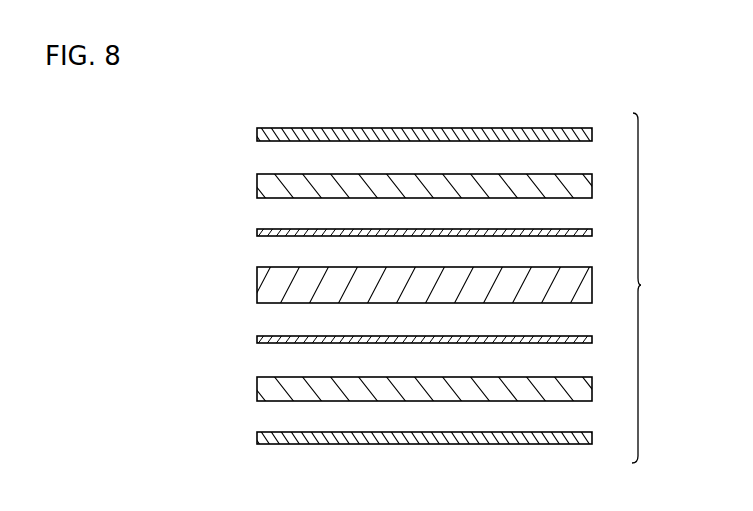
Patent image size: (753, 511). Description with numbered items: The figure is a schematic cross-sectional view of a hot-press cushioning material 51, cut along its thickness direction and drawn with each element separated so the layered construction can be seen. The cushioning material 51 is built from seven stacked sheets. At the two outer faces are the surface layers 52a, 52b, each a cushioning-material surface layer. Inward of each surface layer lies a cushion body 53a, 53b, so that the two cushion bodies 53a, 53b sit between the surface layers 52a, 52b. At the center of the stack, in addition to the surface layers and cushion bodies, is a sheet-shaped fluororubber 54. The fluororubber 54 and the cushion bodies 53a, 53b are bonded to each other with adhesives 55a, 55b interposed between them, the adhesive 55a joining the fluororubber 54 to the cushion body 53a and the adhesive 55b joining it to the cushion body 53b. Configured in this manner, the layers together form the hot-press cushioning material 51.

The cushioning material 51 is at (677, 297).
The surface layer 52a is at (262, 132).
The surface layer 52b is at (262, 437).
The cushion body 53a is at (262, 184).
The cushion body 53b is at (262, 386).
The fluororubber 54 is at (262, 283).
The adhesive 55a is at (262, 232).
The adhesive 55b is at (262, 339).